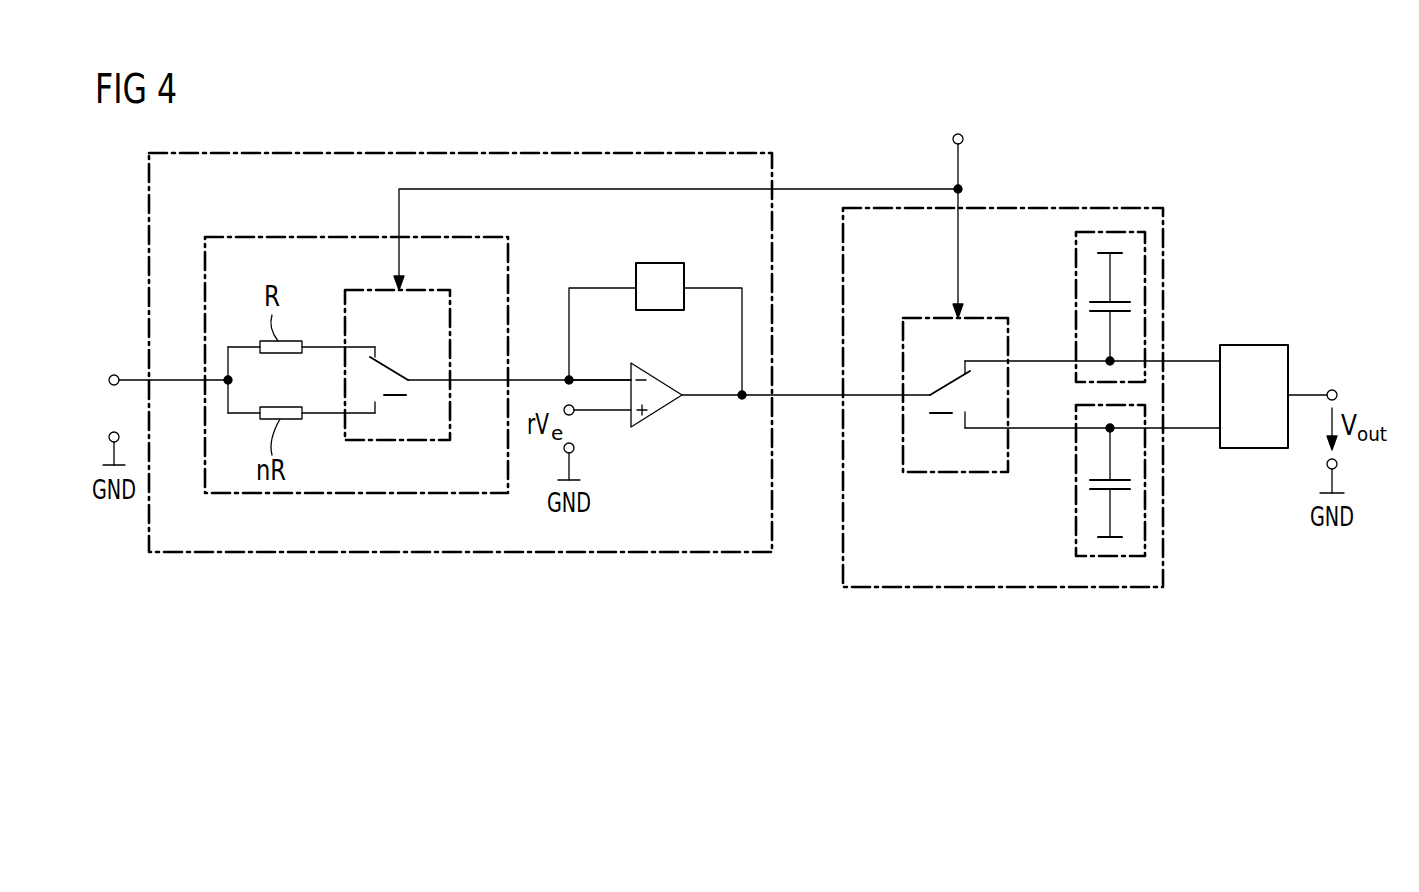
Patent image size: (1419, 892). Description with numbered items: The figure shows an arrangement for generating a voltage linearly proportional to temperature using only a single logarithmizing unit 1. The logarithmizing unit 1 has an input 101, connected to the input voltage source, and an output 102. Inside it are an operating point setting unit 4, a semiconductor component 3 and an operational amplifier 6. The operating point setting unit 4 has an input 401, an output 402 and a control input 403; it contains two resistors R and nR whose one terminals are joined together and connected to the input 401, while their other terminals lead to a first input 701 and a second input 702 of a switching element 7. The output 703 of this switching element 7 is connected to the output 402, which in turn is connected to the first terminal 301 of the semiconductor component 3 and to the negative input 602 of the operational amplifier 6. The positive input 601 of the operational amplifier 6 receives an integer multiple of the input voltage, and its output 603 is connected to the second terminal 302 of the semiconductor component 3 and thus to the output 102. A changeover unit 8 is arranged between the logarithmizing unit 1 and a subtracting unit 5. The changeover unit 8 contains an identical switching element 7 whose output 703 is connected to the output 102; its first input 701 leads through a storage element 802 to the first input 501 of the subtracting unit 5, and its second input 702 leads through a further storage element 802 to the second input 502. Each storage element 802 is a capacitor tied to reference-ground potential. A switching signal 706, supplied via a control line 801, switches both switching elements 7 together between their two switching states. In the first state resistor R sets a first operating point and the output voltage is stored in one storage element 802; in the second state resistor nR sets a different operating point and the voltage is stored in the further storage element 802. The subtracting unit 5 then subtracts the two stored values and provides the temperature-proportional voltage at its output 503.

The logarithmizing unit 1 is at (440, 552).
The semiconductor component 3 is at (660, 310).
The operating point setting unit 4 is at (283, 237).
The subtracting unit 5 is at (1256, 345).
The operational amplifier 6 is at (660, 415).
The switching element 7 is at (422, 288).
The changeover unit 8 is at (968, 587).
The input 101 is at (145, 380).
The output 102 is at (775, 395).
The first terminal 301 is at (605, 288).
The second terminal 302 is at (712, 288).
The input 401 is at (205, 380).
The output 402 is at (508, 380).
The control input 403 is at (397, 237).
The first input 501 is at (1220, 361).
The second input 502 is at (1220, 428).
The output 503 is at (1290, 395).
The positive input 601 is at (600, 410).
The negative input 602 is at (598, 380).
The output 603 is at (697, 395).
The first input 701 is at (345, 347).
The second input 702 is at (345, 413).
The output 703 is at (450, 380).
The switching signal 706 is at (965, 140).
The switch control line 801 is at (960, 208).
The storage element 802 is at (1076, 270).